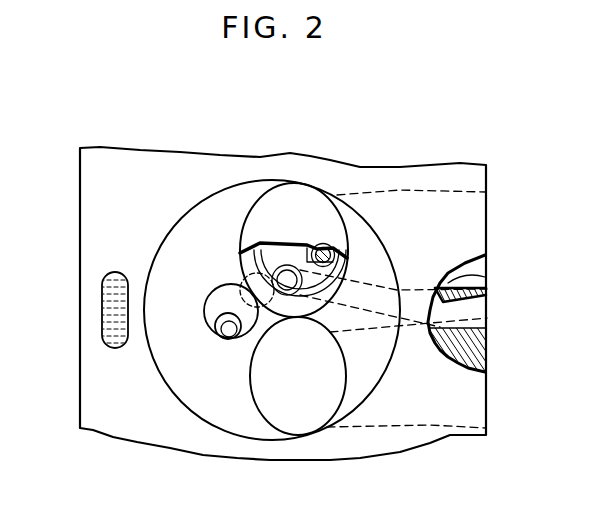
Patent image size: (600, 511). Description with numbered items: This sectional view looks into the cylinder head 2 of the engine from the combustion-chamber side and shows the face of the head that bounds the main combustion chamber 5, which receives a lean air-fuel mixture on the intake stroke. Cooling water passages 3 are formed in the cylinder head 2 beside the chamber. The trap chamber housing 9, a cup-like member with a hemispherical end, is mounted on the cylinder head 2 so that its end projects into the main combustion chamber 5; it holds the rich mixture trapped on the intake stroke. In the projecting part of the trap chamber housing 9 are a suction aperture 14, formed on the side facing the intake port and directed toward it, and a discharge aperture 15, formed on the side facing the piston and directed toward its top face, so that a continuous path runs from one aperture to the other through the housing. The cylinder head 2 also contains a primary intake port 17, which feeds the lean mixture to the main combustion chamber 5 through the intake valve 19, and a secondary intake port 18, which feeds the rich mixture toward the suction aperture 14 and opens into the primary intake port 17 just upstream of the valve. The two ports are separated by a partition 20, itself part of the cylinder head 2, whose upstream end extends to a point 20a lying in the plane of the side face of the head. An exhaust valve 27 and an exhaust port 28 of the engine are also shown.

The cylinder head 2 is at (130, 433).
The cooling water passages 3 is at (102, 309).
The main combustion chamber 5 is at (227, 197).
The trap chamber housing 9 is at (215, 302).
The suction aperture 14 is at (240, 279).
The discharge aperture 15 is at (227, 327).
The primary intake port 17 is at (465, 228).
The secondary intake port 18 is at (483, 327).
The intake valve 19 is at (312, 198).
The partition 20 is at (280, 246).
The upstream end point of partition 20a is at (488, 295).
The exhaust valve 27 is at (312, 428).
The exhaust port 28 is at (460, 412).